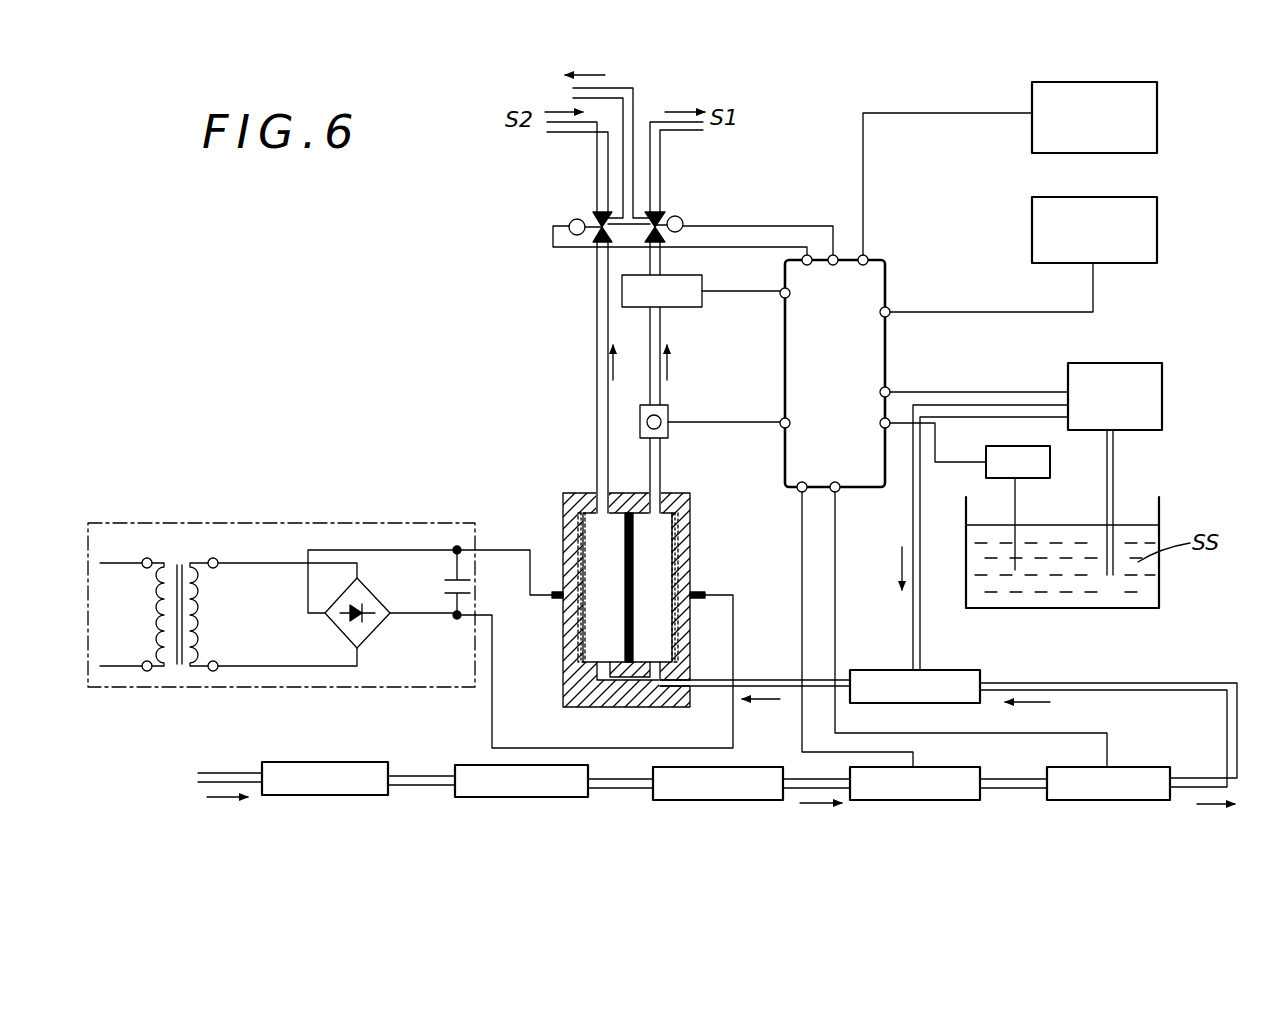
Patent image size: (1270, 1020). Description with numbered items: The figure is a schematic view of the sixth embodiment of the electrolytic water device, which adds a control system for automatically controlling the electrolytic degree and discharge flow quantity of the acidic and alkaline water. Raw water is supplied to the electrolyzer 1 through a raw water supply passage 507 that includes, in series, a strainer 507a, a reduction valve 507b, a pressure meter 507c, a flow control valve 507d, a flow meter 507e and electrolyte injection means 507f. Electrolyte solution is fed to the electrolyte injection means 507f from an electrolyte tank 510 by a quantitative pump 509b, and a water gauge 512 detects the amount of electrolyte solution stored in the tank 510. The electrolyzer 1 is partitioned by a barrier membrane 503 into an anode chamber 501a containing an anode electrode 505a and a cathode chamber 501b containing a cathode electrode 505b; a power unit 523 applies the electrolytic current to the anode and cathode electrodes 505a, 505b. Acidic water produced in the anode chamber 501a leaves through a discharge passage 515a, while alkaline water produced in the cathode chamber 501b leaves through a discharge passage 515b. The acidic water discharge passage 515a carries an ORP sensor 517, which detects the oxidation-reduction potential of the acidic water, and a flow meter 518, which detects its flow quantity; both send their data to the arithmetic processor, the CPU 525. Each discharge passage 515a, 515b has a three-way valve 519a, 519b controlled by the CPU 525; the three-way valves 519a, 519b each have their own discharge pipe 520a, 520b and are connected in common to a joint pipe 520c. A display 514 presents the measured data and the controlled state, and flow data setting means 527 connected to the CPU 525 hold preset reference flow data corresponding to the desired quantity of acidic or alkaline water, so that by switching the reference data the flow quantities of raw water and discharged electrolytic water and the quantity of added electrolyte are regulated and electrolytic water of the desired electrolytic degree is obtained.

The electrolyzer 1 is at (640, 605).
The anode chamber 501a is at (688, 540).
The cathode chamber 501b is at (580, 640).
The barrier membrane 503 is at (563, 618).
The anode electrode 505a is at (653, 558).
The cathode electrode 505b is at (575, 688).
The raw water supply passage 507 is at (696, 638).
The strainer 507a is at (300, 797).
The reduction valve 507b is at (525, 799).
The pressure meter 507c is at (717, 802).
The flow control valve 507d is at (918, 802).
The flow meter 507e is at (1100, 802).
The electrolyte injection means 507f is at (945, 668).
The quantitative pump 509b is at (1145, 363).
The electrolyte tank 510 is at (1070, 608).
The water gauge 512 is at (1050, 462).
The display 514 is at (1157, 225).
The discharge passage 515a is at (660, 388).
The discharge passage 515b is at (597, 388).
The ORP sensor 517 is at (668, 415).
The flow meter 518 is at (702, 302).
The three-way valve 519a is at (668, 215).
The three-way valve 519b is at (592, 218).
The discharge pipe 520a is at (660, 170).
The discharge pipe 520b is at (597, 122).
The joint pipe 520c is at (622, 157).
The power unit 523 is at (162, 523).
The arithmetic processor (CPU) 525 is at (887, 375).
The flow data setting means 527 is at (1150, 127).